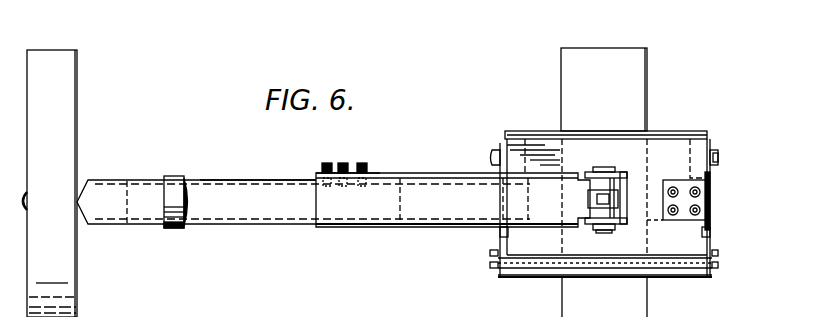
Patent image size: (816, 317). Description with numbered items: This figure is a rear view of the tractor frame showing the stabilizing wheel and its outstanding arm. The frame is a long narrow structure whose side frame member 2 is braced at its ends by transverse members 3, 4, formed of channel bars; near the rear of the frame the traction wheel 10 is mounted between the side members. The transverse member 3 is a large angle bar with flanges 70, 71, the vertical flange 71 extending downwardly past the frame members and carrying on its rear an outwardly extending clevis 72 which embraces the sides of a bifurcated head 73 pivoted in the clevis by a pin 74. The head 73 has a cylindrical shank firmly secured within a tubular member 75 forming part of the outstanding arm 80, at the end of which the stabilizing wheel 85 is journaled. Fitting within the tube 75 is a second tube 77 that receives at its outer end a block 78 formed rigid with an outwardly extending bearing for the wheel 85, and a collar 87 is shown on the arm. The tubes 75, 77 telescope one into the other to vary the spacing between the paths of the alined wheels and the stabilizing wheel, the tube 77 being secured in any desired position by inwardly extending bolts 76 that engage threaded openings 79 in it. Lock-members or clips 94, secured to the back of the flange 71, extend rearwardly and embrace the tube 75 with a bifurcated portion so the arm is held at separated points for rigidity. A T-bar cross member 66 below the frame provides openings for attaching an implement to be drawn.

The side frame member 2 is at (527, 131).
The transverse member 3 is at (595, 131).
The transverse member 4 is at (693, 145).
The traction wheel 10 is at (613, 48).
The T-bar cross member 66 is at (523, 278).
The flange 70 is at (667, 137).
The vertical flange 71 is at (677, 197).
The clevis 72 is at (623, 173).
The bifurcated head 73 is at (580, 203).
The pin 74 is at (607, 227).
The tubular member 75 is at (434, 227).
The bolts 76 is at (357, 165).
The second tube 77 is at (240, 225).
The block 78 is at (128, 208).
The threaded openings 79 is at (300, 176).
The outstanding arm 80 is at (277, 178).
The stabilizing wheel 85 is at (50, 183).
The collar 87 is at (172, 174).
The lock-members or clips 94 is at (707, 230).